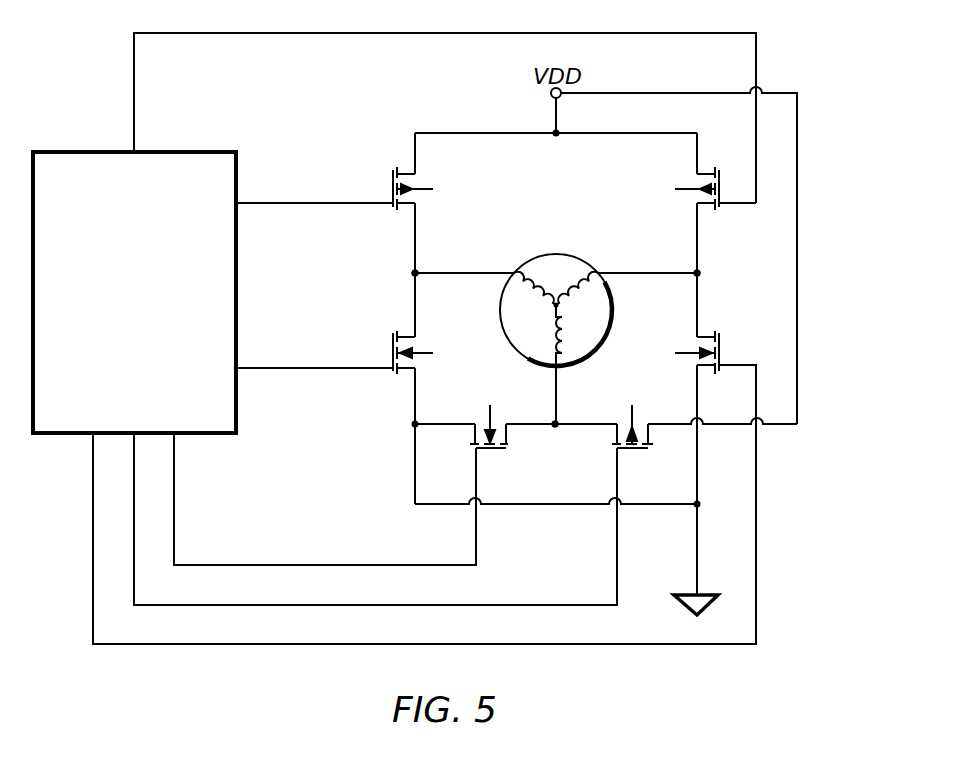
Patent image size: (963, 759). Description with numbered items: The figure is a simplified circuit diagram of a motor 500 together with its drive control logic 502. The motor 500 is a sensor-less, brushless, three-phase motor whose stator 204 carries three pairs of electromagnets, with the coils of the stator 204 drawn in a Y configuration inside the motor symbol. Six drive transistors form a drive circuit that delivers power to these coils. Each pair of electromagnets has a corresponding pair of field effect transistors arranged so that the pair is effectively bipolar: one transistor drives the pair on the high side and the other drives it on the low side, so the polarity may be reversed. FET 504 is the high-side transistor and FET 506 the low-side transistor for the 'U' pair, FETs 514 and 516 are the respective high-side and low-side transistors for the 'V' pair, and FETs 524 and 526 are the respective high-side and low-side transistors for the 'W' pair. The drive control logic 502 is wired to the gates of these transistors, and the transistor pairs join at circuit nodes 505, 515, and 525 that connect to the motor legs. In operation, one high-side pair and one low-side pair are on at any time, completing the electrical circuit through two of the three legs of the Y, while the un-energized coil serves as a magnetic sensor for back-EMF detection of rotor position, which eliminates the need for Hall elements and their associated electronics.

The drive control logic 502 is at (153, 326).
The FET 504 is at (428, 192).
The FET 506 is at (434, 352).
The FET 514 is at (682, 188).
The FET 516 is at (682, 352).
The FET 524 is at (640, 450).
The FET 526 is at (496, 448).
The bridge output node 505 is at (412, 274).
The bridge output node 515 is at (700, 273).
The motor center tap node 525 is at (558, 428).
The motor 500 is at (598, 254).
The stator 204 is at (553, 254).